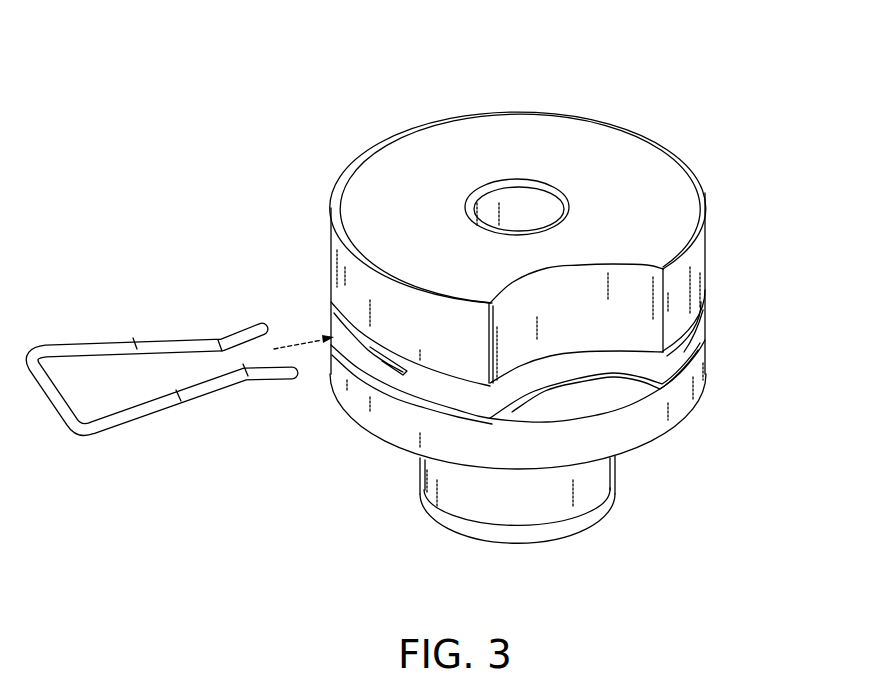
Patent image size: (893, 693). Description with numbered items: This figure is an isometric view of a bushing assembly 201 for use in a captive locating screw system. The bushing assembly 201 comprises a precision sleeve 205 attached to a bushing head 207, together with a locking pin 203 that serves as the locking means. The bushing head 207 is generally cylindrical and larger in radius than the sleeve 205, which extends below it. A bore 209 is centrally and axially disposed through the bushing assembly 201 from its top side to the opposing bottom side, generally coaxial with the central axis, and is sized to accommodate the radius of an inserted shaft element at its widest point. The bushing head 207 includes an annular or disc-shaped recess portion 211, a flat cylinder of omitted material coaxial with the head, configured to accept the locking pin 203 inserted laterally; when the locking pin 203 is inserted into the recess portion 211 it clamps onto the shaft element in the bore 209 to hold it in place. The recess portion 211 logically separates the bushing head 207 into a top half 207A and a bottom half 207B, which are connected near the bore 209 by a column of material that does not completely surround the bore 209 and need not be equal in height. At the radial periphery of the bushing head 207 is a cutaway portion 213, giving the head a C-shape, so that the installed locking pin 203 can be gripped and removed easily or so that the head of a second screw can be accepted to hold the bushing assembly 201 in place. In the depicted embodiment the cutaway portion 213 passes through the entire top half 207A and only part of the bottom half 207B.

The bushing assembly 201 is at (750, 40).
The locking pin 203 is at (77, 344).
The precision sleeve 205 is at (598, 513).
The bushing head 207 is at (708, 246).
The top half of bushing head 207A is at (338, 278).
The bottom half of bushing head 207B is at (338, 410).
The bore 209 is at (535, 209).
The recess portion 211 is at (675, 347).
The cutaway portion 213 is at (611, 325).